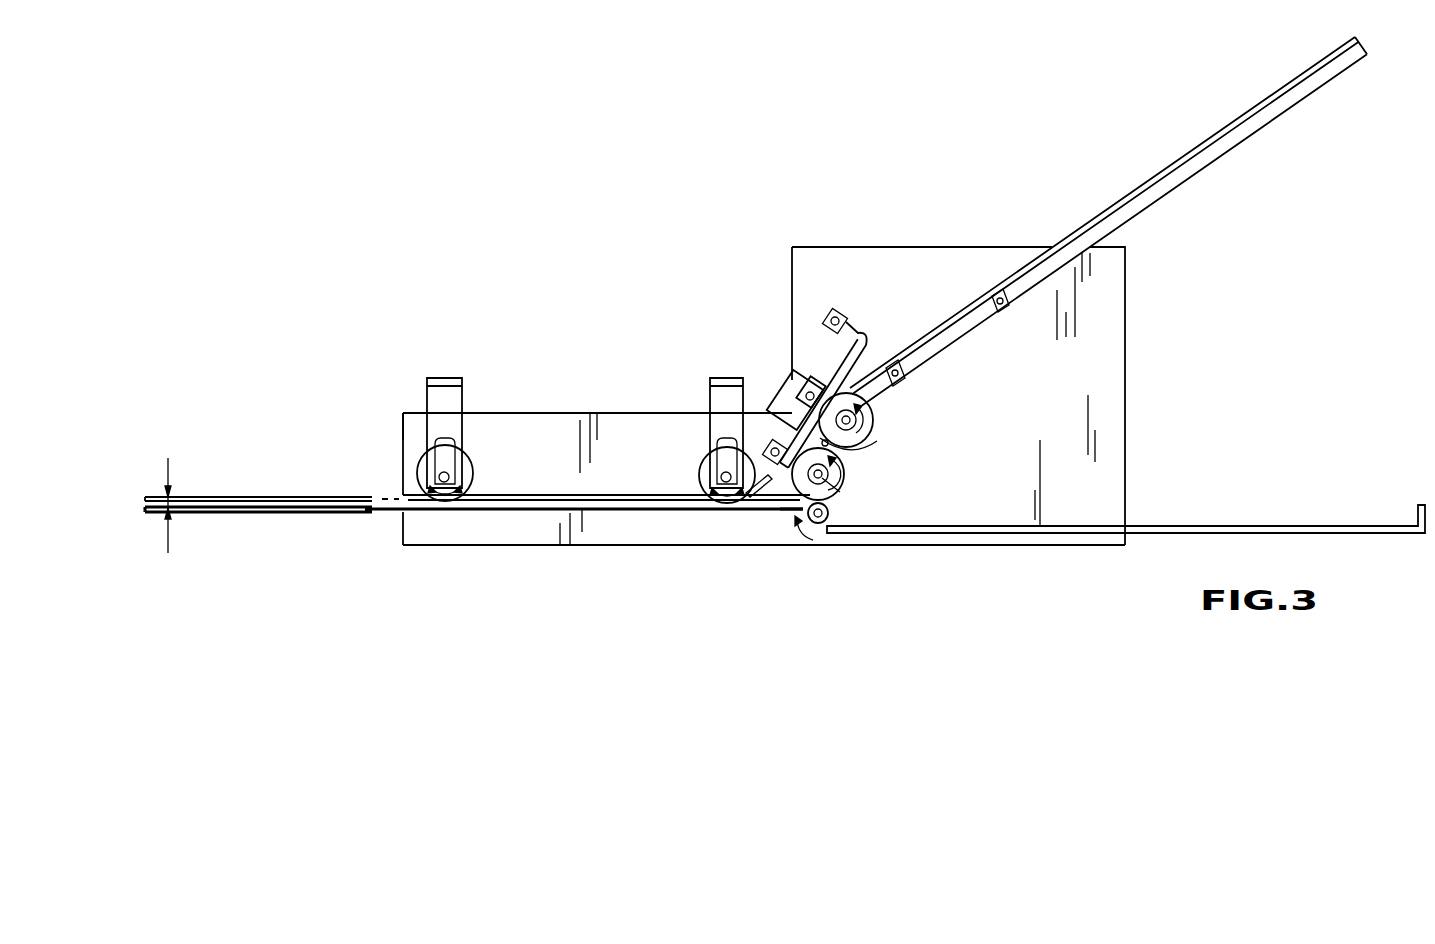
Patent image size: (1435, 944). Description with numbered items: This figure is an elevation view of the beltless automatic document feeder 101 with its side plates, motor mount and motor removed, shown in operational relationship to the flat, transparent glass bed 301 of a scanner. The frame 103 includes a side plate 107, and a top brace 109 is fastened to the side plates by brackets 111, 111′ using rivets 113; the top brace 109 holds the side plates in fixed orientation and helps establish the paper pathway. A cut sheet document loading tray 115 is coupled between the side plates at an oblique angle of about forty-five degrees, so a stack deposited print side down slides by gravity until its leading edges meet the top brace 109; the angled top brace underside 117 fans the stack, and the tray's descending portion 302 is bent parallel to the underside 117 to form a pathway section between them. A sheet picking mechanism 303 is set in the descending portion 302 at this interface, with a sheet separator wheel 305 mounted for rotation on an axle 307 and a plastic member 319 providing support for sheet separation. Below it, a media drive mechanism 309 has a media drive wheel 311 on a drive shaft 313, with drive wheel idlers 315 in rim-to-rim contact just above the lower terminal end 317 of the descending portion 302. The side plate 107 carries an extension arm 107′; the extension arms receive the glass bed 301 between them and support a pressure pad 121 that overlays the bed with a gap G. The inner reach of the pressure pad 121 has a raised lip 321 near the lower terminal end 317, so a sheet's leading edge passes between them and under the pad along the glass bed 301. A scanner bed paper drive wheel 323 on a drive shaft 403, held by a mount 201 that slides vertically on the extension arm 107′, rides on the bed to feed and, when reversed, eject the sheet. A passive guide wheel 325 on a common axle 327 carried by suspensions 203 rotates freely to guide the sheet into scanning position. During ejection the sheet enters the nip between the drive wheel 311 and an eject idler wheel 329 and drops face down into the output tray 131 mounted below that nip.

The beltless automatic document feeder 101 is at (516, 240).
The frame 103 is at (403, 412).
The right side plate 107 is at (1112, 292).
The extension arm 107′ is at (560, 420).
The top brace 109 is at (850, 340).
The bracket 111 is at (810, 374).
The bracket 111′ is at (786, 418).
The rivets 113 is at (828, 314).
The cut sheet document loading tray 115 is at (1272, 97).
The top brace underside 117 is at (868, 350).
The pressure pad 121 is at (240, 494).
The output tray 131 is at (1333, 526).
The mount 201 is at (708, 393).
The suspensions 203 is at (447, 378).
The glass bed 301 is at (240, 513).
The descending portion 302 is at (860, 448).
The sheet picking mechanism 303 is at (888, 428).
The sheet separator wheel 305 is at (872, 438).
The axle 307 is at (875, 416).
The media drive mechanism 309 is at (880, 517).
The media drive wheel 311 is at (863, 448).
The drive shaft 313 is at (824, 484).
The drive wheel idlers 315 is at (806, 530).
The lower terminal end 317 is at (783, 520).
The plastic member 319 is at (797, 372).
The raised lip 321 is at (768, 500).
The scanner bed paper drive wheel 323 is at (718, 455).
The passive guide wheel 325 is at (472, 468).
The common axle 327 is at (420, 470).
The eject idler wheel 329 is at (812, 548).
The drive shaft 403 is at (717, 477).
The gap G is at (169, 488).